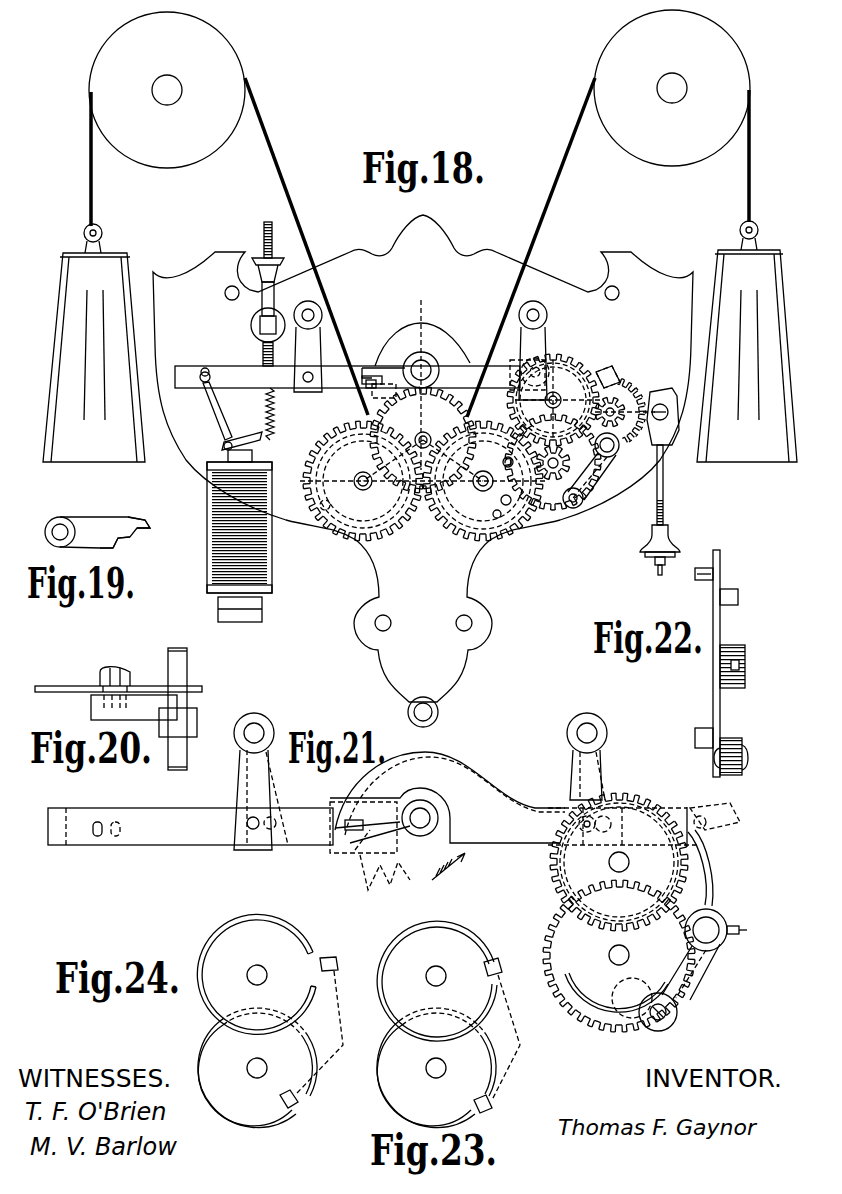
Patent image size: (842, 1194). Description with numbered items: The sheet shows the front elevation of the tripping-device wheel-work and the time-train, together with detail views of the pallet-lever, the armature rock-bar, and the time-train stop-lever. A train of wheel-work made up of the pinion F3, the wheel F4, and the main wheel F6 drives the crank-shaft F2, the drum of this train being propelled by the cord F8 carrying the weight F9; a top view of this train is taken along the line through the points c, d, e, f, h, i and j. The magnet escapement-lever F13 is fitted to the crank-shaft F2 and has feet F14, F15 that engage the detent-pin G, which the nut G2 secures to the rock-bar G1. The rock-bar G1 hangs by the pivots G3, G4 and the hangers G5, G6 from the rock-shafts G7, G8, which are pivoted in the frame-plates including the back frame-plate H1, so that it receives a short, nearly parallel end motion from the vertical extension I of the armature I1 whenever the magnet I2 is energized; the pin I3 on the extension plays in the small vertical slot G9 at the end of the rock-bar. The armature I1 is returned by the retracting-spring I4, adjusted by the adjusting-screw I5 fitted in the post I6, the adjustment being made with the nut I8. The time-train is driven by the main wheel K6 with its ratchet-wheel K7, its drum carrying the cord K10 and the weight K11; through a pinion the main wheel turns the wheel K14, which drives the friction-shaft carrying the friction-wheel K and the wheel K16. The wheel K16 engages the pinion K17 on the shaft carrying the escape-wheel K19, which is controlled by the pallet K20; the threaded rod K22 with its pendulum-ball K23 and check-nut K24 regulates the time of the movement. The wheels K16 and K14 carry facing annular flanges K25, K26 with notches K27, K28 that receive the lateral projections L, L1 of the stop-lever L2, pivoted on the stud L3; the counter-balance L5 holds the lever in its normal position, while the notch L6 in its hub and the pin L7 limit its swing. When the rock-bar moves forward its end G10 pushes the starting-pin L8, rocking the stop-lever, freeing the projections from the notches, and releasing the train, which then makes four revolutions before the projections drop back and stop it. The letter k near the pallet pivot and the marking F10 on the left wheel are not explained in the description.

In FIG. 18, the cord F8 is at (322, 296).
In FIG. 18, the cord K10 is at (522, 296).
In FIG. 18, the weight F9 is at (94, 343).
In FIG. 18, the weight K11 is at (747, 341).
In FIG. 18, the back frame-plate H1 is at (423, 471).
In FIG. 18, the nut I8 is at (276, 262).
In FIG. 18, the post I6 is at (268, 312).
In FIG. 18, the adjusting-screw I5 is at (274, 354).
In FIG. 18, the rock-shaft G7 is at (305, 310).
In FIG. 21, the rock-shaft G7 is at (262, 726).
In FIG. 18, the hanger G5 is at (308, 359).
In FIG. 21, the hanger G5 is at (238, 793).
In FIG. 18, the pivot G3 is at (306, 382).
In FIG. 21, the pivot G3 is at (250, 830).
In FIG. 18, the rock-shaft G8 is at (540, 314).
In FIG. 21, the rock-shaft G8 is at (594, 731).
In FIG. 18, the hanger G6 is at (540, 345).
In FIG. 21, the hanger G6 is at (572, 778).
In FIG. 18, the rock-bar G1 is at (347, 377).
In FIG. 20, the rock-bar G1 is at (52, 686).
In FIG. 21, the rock-bar G1 is at (190, 826).
In FIG. 18, the vertical slot G9 is at (203, 372).
In FIG. 21, the vertical slot G9 is at (103, 822).
In FIG. 18, the pin I3 is at (212, 372).
In FIG. 18, the vertical extension I is at (207, 416).
In FIG. 18, the armature I1 is at (242, 441).
In FIG. 22, the armature I1 is at (694, 738).
In FIG. 24, the armature I1 is at (280, 1099).
In FIG. 18, the retracting-spring I4 is at (266, 408).
In FIG. 18, the magnet I2 is at (276, 564).
In FIG. 18, the pinion F3 is at (432, 358).
In FIG. 21, the pinion F3 is at (447, 797).
In FIG. 18, the section-line point c is at (417, 378).
In FIG. 18, the magnet escapement-lever F13 is at (396, 364).
In FIG. 19, the magnet escapement-lever F13 is at (97, 532).
In FIG. 21, the magnet escapement-lever F13 is at (372, 822).
In FIG. 18, the foot F14 is at (360, 378).
In FIG. 19, the foot F14 is at (150, 526).
In FIG. 21, the foot F14 is at (342, 818).
In FIG. 18, the detent-pin G is at (366, 389).
In FIG. 19, the detent-pin G is at (140, 540).
In FIG. 20, the detent-pin G is at (104, 670).
In FIG. 21, the detent-pin G is at (340, 828).
In FIG. 18, the foot F15 is at (384, 391).
In FIG. 19, the foot F15 is at (124, 550).
In FIG. 21, the foot F15 is at (376, 860).
In FIG. 18, the wheel F4 is at (423, 440).
In FIG. 18, the section-line point d is at (416, 437).
In FIG. 18, the main wheel F6 is at (363, 481).
In FIG. 18, the section-line point e is at (356, 479).
In FIG. 18, the left gear hub F10 is at (363, 481).
In FIG. 18, the main wheel K6 is at (458, 524).
In FIG. 18, the ratchet-wheel K7 is at (465, 494).
In FIG. 18, the section-line point f is at (473, 500).
In FIG. 18, the friction-shaft wheel K16 is at (568, 367).
In FIG. 21, the friction-shaft wheel K16 is at (558, 874).
In FIG. 18, the section-line point h is at (548, 403).
In FIG. 18, the annular flange K25 is at (514, 404).
In FIG. 21, the annular flange K25 is at (573, 885).
In FIG. 24, the annular flange K25 is at (280, 922).
In FIG. 23, the annular flange K25 is at (456, 926).
In FIG. 18, the pivot G4 is at (524, 372).
In FIG. 21, the pivot G4 is at (582, 820).
In FIG. 18, the wheel K14 is at (557, 522).
In FIG. 21, the wheel K14 is at (582, 1022).
In FIG. 18, the friction-wheel K is at (559, 463).
In FIG. 18, the pinion K17 is at (616, 416).
In FIG. 18, the section-line point i is at (625, 402).
In FIG. 18, the escape-wheel K19 is at (640, 394).
In FIG. 18, the end of rock-bar G10 is at (606, 378).
In FIG. 21, the end of rock-bar G10 is at (690, 815).
In FIG. 18, the starting-pin L8 is at (622, 378).
In FIG. 21, the starting-pin L8 is at (722, 812).
In FIG. 22, the starting-pin L8 is at (700, 581).
In FIG. 18, the section-line point j is at (664, 403).
In FIG. 18, the lever pivot line k is at (668, 412).
In FIG. 18, the pallet K20 is at (656, 442).
In FIG. 18, the threaded rod K22 is at (664, 497).
In FIG. 18, the pendulum-ball K23 is at (648, 540).
In FIG. 18, the check-nut K24 is at (654, 561).
In FIG. 18, the stud L3 is at (607, 445).
In FIG. 21, the stud L3 is at (706, 930).
In FIG. 18, the stop-lever L2 is at (622, 462).
In FIG. 21, the stop-lever L2 is at (702, 966).
In FIG. 22, the stop-lever L2 is at (722, 630).
In FIG. 20, the nut G2 is at (122, 672).
In FIG. 20, the crank-shaft F2 is at (188, 678).
In FIG. 21, the crank-shaft F2 is at (425, 827).
In FIG. 21, the annular flange K26 is at (570, 976).
In FIG. 24, the annular flange K26 is at (262, 1118).
In FIG. 23, the annular flange K26 is at (434, 1068).
In FIG. 22, the lateral projection L is at (740, 596).
In FIG. 24, the lateral projection L is at (348, 957).
In FIG. 23, the lateral projection L is at (500, 963).
In FIG. 21, the notch L6 is at (739, 927).
In FIG. 22, the notch L6 is at (745, 661).
In FIG. 21, the pin L7 is at (740, 932).
In FIG. 22, the pin L7 is at (740, 670).
In FIG. 22, the counter-balance L5 is at (742, 746).
In FIG. 24, the notch K27 is at (320, 966).
In FIG. 23, the notch K27 is at (490, 978).
In FIG. 24, the notch K28 is at (302, 1102).
In FIG. 23, the notch K28 is at (474, 1106).
In FIG. 23, the lateral projection L1 is at (494, 1106).